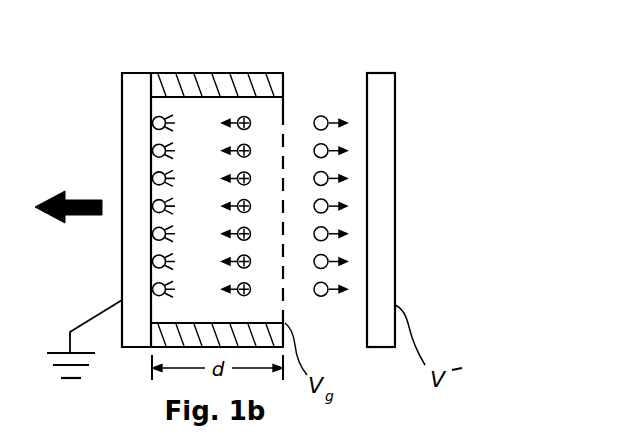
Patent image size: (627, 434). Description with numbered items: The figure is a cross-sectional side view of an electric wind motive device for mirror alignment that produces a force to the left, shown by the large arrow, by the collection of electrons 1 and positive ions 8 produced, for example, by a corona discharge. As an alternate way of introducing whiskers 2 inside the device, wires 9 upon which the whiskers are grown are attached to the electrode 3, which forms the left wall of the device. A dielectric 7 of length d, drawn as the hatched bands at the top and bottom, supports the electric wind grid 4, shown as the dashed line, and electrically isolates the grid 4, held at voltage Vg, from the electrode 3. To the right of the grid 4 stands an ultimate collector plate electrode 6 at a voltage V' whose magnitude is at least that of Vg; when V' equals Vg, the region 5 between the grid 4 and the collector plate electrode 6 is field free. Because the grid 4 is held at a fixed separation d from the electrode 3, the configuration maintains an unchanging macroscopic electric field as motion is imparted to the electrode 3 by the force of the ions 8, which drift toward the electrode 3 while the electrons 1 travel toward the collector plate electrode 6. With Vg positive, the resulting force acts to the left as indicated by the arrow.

The electrons 1 is at (327, 110).
The whiskers 2 is at (213, 138).
The electrode 3 is at (137, 245).
The electric wind grid 4 is at (287, 106).
The region 5 is at (354, 98).
The ultimate collector plate electrode 6 is at (382, 112).
The dielectric 7 is at (232, 33).
The positive ions 8 is at (236, 118).
The wires 9 is at (152, 123).